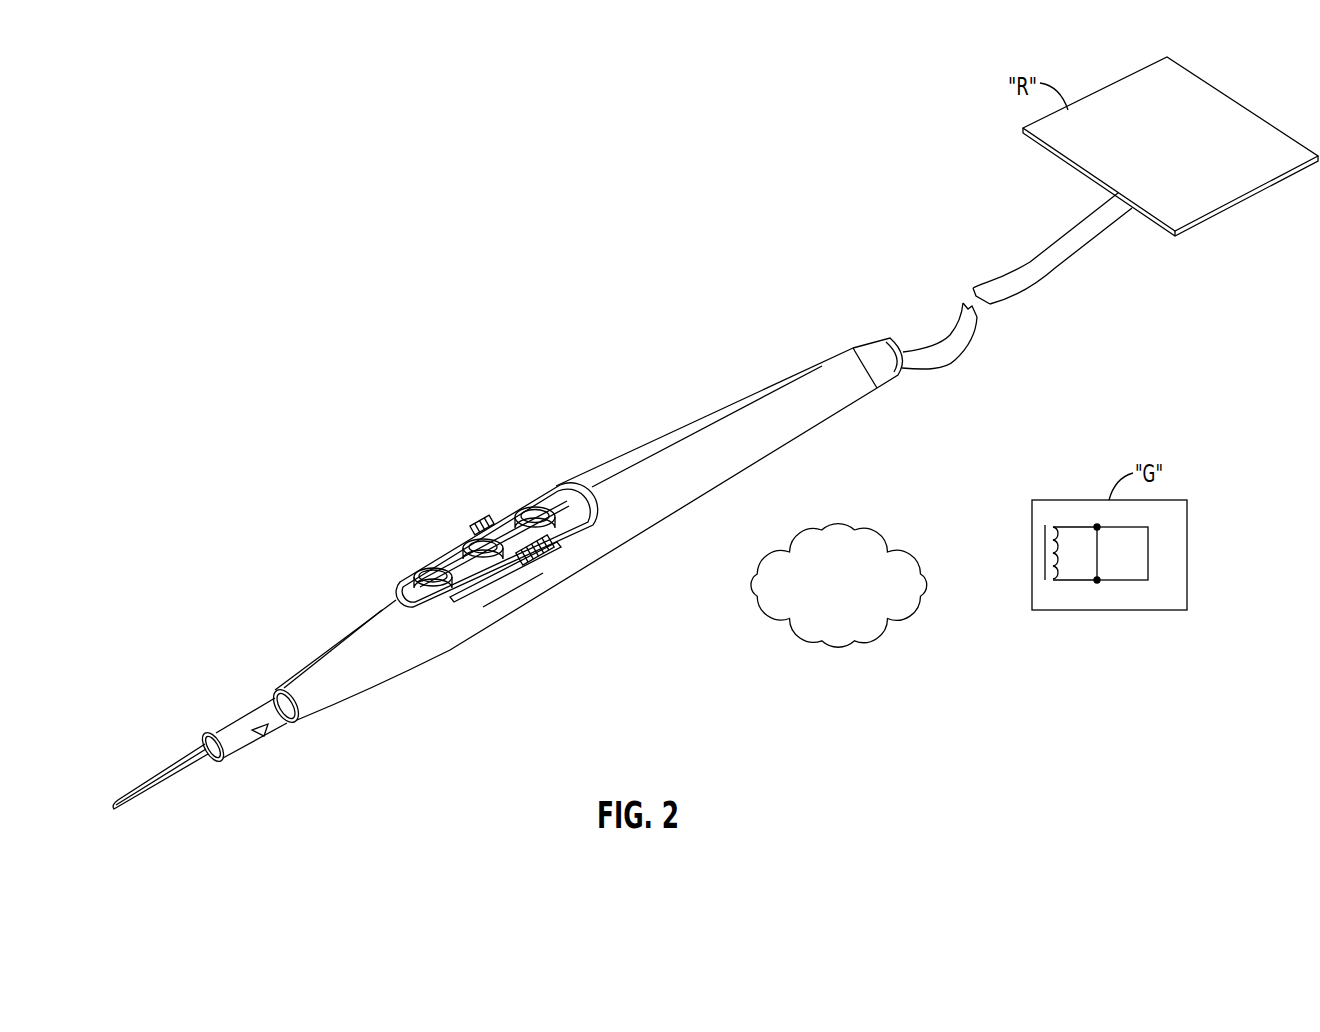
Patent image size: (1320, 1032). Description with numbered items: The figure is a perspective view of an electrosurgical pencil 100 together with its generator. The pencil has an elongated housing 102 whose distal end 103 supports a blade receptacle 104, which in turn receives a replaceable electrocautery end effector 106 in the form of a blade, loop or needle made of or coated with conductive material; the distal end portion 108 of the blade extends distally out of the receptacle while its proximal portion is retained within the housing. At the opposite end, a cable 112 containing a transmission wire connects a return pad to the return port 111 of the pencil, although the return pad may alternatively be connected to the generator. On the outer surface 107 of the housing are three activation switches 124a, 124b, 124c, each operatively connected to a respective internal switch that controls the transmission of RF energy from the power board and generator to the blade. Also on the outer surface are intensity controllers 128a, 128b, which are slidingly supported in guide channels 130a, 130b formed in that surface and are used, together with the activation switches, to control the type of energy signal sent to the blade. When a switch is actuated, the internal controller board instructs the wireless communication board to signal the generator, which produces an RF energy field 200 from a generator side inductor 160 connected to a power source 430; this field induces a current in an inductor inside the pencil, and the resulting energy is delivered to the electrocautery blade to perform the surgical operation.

The electrosurgical pencil 100 is at (374, 358).
The elongated housing 102 is at (611, 464).
The distal end 103 is at (310, 658).
The blade receptacle 104 is at (250, 740).
The electrocautery end effector 106 is at (162, 767).
The outer surface 107 is at (681, 502).
The distal end portion 108 is at (113, 810).
The return port 111 is at (868, 342).
The cable 112 is at (944, 333).
The activation switch 124a is at (419, 573).
The activation switch 124b is at (468, 539).
The activation switch 124c is at (524, 508).
The intensity controller 128a is at (553, 552).
The intensity controller 128b is at (489, 519).
The guide channel 130a is at (504, 584).
The guide channel 130b is at (390, 585).
The generator side inductor 160 is at (1043, 553).
The RF energy field 200 is at (843, 520).
The power source 430 is at (1133, 550).